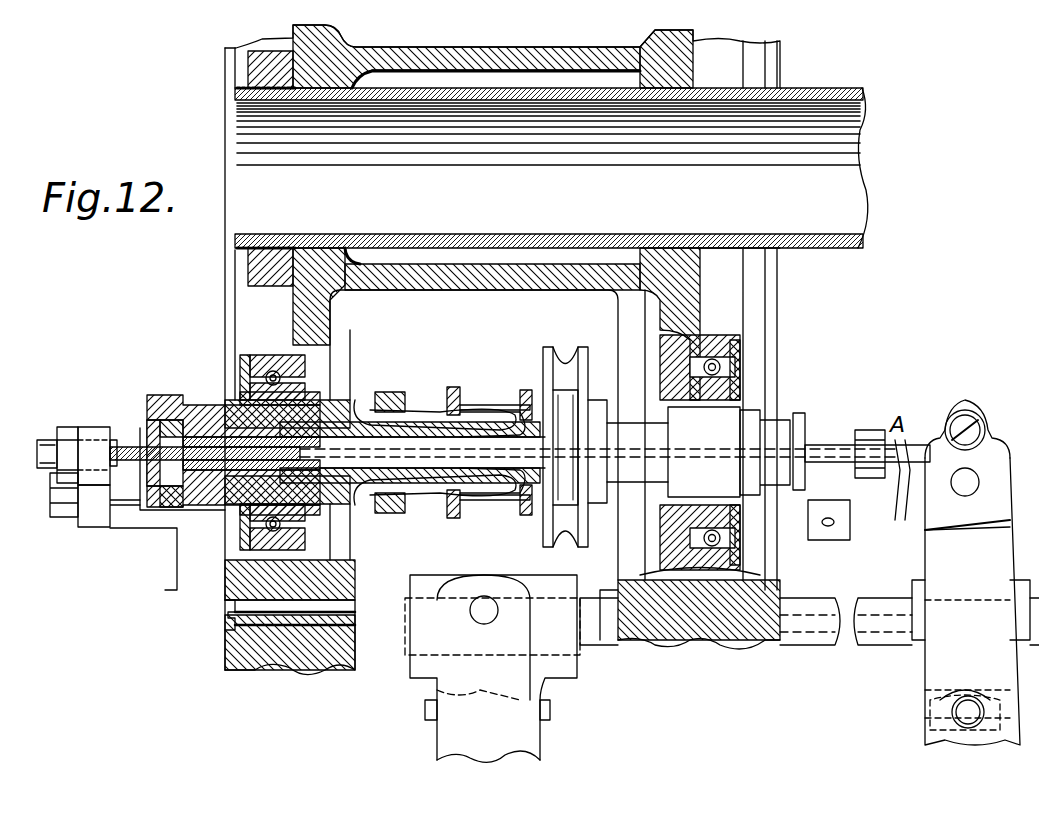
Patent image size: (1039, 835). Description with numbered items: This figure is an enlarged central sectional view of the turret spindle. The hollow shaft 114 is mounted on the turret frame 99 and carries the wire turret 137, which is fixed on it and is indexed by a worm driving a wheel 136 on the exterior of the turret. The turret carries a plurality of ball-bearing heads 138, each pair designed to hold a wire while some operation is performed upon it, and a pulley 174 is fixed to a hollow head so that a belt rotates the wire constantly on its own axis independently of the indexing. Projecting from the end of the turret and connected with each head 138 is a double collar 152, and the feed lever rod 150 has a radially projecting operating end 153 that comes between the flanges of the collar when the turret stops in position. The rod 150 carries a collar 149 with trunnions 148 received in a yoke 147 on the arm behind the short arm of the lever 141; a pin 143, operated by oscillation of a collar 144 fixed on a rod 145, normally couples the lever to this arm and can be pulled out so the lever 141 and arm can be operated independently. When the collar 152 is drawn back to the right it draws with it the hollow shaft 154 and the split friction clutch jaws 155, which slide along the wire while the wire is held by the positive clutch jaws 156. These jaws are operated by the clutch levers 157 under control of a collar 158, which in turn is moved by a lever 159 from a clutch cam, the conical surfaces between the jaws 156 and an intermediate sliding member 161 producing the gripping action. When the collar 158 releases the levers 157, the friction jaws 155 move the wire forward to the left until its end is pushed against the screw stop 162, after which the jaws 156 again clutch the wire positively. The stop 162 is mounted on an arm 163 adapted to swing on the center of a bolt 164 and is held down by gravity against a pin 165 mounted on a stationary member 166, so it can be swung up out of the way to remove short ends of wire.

The turret frame 99 is at (290, 660).
The hollow shaft 114 is at (795, 96).
The wheel 136 is at (700, 635).
The wire turret 137 is at (445, 315).
The ball-bearing heads 138 is at (178, 395).
The lever 141 is at (925, 735).
The pin 143 is at (968, 715).
The collar 144 is at (925, 690).
The rod 145 is at (850, 640).
The yoke 147 is at (935, 560).
The trunnions 148 is at (977, 492).
The collar 149 is at (985, 432).
The feed lever rod 150 is at (895, 510).
The double collar 152 is at (855, 406).
The operating end 153 is at (812, 498).
The hollow shaft 154 is at (395, 445).
The split friction clutch jaws 155 is at (220, 470).
The positive clutch jaws 156 is at (172, 500).
The clutch levers 157 is at (430, 490).
The collar 158 is at (460, 400).
The lever 159 is at (437, 755).
The intermediate sliding member 161 is at (338, 420).
The screw stop 162 is at (127, 443).
The arm 163 is at (95, 527).
The bolt 164 is at (50, 495).
The pin 165 is at (55, 517).
The stationary member 166 is at (143, 564).
The pulleys 174 is at (568, 352).